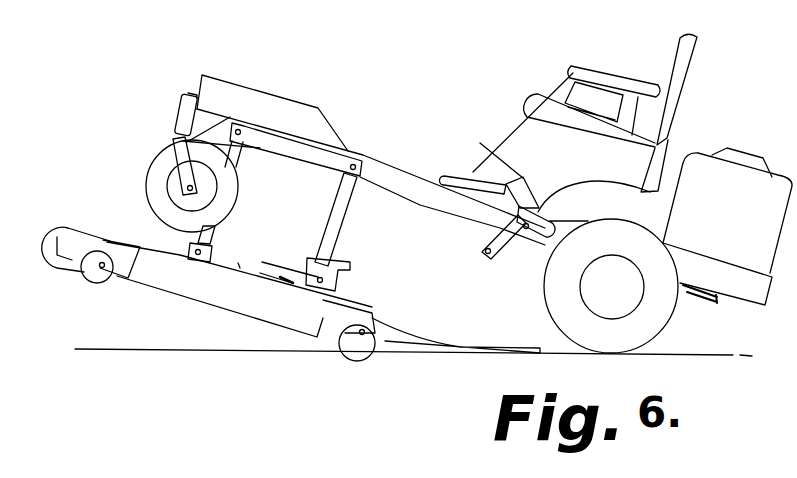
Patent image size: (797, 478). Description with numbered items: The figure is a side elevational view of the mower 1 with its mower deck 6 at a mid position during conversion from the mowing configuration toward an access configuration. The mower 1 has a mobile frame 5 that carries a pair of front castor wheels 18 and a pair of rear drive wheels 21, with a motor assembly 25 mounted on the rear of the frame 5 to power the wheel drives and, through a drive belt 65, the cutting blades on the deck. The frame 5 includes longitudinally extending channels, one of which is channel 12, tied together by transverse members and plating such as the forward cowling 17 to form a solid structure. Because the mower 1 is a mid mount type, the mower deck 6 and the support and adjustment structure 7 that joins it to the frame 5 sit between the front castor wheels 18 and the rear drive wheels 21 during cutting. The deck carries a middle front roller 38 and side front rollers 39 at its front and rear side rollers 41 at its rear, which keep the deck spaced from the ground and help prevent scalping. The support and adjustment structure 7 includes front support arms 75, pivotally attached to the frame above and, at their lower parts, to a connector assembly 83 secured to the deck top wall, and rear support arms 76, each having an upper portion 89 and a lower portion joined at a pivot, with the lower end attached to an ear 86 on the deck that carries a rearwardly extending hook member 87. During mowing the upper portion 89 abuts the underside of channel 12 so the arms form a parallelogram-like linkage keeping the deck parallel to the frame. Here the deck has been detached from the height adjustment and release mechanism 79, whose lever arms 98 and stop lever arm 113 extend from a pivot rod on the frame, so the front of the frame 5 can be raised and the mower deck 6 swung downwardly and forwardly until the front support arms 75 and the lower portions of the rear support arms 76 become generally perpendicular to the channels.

The mower 1 is at (714, 75).
The mobile frame 5 is at (757, 307).
The mower deck 6 is at (160, 291).
The support and adjustment structure 7 is at (343, 222).
The channel 12 is at (397, 162).
The forward cowling 17 is at (275, 93).
The front castor wheels 18 is at (153, 167).
The rear drive wheels 21 is at (675, 319).
The motor assembly 25 is at (792, 181).
The middle front roller 38 is at (54, 243).
The side front rollers 39 is at (93, 284).
The rear side rollers 41 is at (375, 350).
The drive belt 65 is at (493, 346).
The front support arms 75 is at (215, 231).
The rear support arms 76 is at (320, 168).
The height adjustment and release mechanism 79 is at (513, 243).
The connector assembly 83 is at (210, 255).
The ear 86 is at (278, 286).
The hook member 87 is at (340, 267).
The upper portion of rear support arm 89 is at (267, 150).
The lever arms 98 is at (488, 248).
The stop lever arm 113 is at (557, 208).